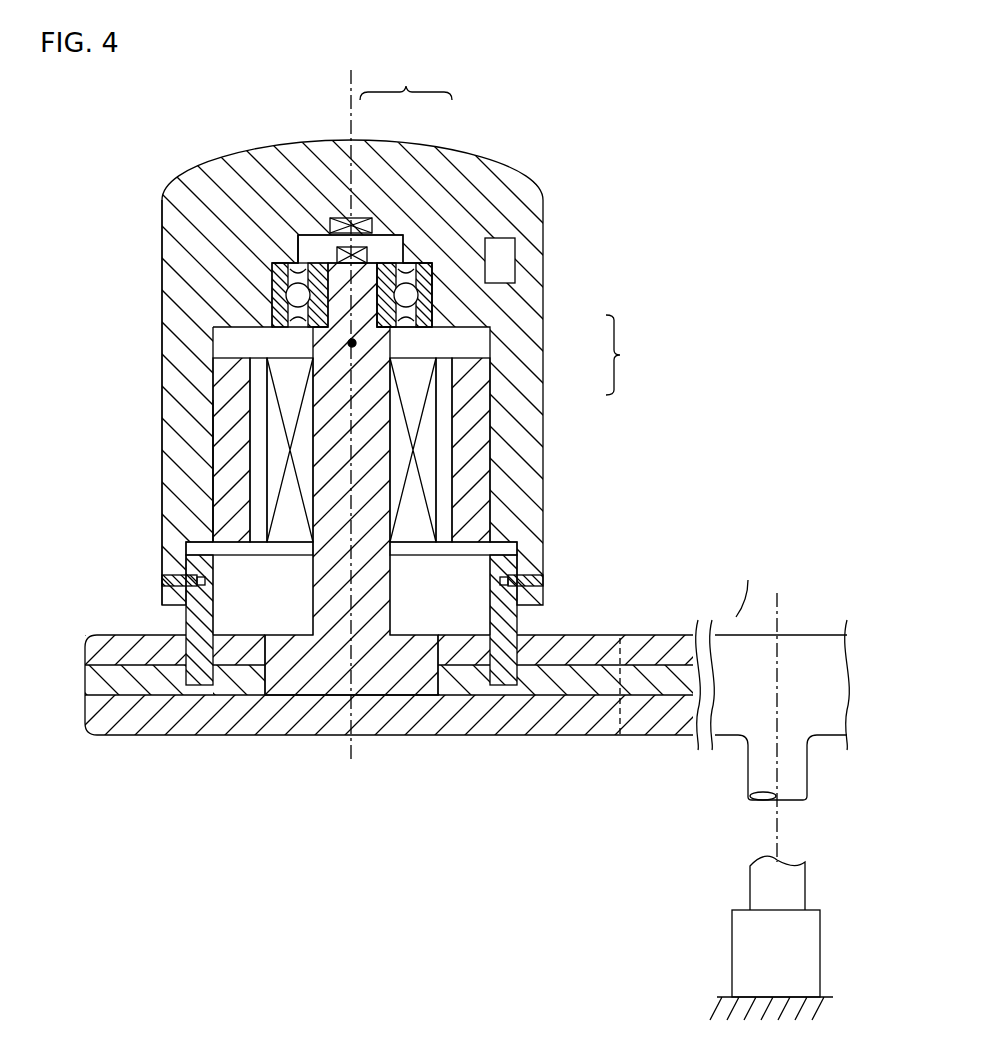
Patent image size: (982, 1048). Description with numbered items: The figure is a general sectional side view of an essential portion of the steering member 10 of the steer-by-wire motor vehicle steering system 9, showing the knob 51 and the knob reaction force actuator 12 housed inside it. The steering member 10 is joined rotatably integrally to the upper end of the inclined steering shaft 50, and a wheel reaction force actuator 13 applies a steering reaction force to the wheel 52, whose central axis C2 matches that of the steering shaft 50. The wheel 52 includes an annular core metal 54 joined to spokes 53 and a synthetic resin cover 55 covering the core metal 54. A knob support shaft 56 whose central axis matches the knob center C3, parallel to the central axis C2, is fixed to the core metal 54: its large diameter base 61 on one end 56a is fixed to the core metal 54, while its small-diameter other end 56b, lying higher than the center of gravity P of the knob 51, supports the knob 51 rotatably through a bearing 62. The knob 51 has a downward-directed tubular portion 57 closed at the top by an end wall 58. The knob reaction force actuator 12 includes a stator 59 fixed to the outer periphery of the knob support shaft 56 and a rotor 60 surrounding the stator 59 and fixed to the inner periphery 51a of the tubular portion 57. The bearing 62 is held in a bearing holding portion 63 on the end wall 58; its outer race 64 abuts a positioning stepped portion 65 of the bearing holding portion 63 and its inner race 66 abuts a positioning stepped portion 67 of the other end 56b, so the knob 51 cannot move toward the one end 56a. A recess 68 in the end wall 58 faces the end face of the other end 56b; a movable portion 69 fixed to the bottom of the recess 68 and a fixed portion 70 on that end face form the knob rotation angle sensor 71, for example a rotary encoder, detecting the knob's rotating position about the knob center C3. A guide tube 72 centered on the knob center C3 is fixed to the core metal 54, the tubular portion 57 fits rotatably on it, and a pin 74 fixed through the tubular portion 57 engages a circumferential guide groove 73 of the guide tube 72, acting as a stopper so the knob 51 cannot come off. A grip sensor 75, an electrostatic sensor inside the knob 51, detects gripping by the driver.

The motor vehicle steering system 9 is at (589, 118).
The steering member 10 is at (742, 613).
The knob reaction force actuator 12 is at (454, 428).
The wheel reaction force actuator 13 is at (808, 957).
The steering shaft 50 is at (793, 778).
The knob 51 is at (491, 152).
The inner periphery 51a is at (223, 507).
The wheel 52 is at (628, 714).
The spokes 53 is at (670, 720).
The core metal 54 is at (135, 688).
The cover 55 is at (120, 650).
The knob support shaft 56 is at (410, 581).
The one end 56a is at (378, 690).
The other end 56b is at (370, 249).
The tubular portion 57 is at (175, 430).
The end wall 58 is at (280, 166).
The stator 59 is at (413, 367).
The rotor 60 is at (472, 384).
The base 61 is at (288, 700).
The bearing 62 is at (434, 305).
The bearing holding portion 63 is at (282, 329).
The outer race 64 is at (283, 297).
The positioning stepped portion 65 is at (272, 278).
The inner race 66 is at (300, 256).
The positioning stepped portion 67 is at (293, 334).
The recess 68 is at (391, 254).
The movable portion 69 is at (352, 217).
The fixed portion 70 is at (385, 250).
The knob rotation angle sensor 71 is at (406, 77).
The guide tube 72 is at (512, 622).
The guide groove 73 is at (498, 587).
The pin 74 is at (162, 580).
The grip sensor 75 is at (516, 262).
The center of gravity P is at (353, 346).
The central axis C2 is at (779, 603).
The knob center C3 is at (350, 78).